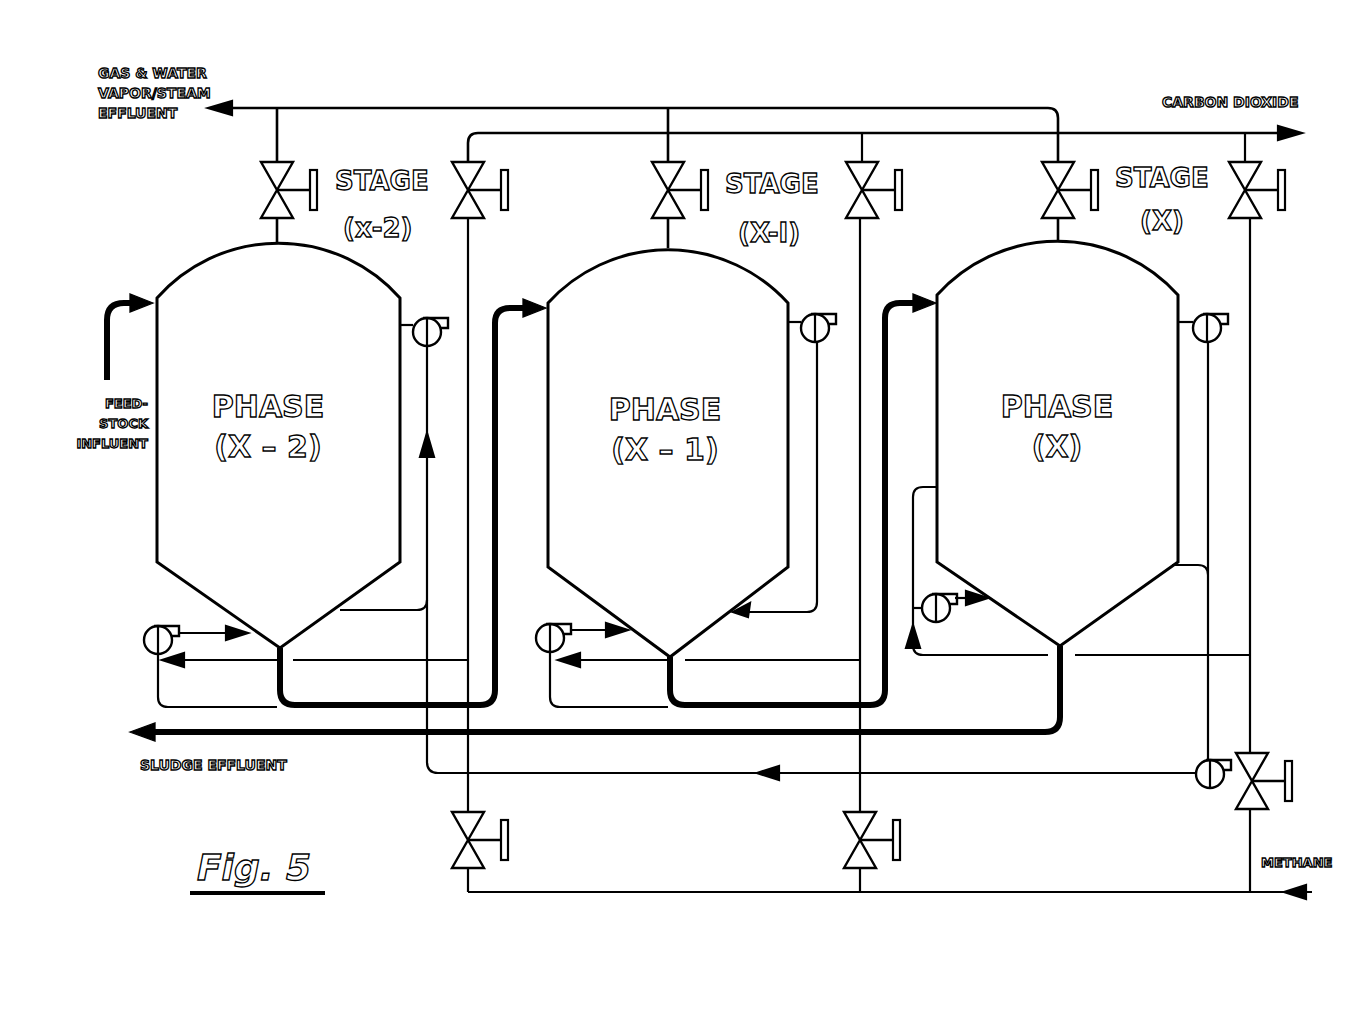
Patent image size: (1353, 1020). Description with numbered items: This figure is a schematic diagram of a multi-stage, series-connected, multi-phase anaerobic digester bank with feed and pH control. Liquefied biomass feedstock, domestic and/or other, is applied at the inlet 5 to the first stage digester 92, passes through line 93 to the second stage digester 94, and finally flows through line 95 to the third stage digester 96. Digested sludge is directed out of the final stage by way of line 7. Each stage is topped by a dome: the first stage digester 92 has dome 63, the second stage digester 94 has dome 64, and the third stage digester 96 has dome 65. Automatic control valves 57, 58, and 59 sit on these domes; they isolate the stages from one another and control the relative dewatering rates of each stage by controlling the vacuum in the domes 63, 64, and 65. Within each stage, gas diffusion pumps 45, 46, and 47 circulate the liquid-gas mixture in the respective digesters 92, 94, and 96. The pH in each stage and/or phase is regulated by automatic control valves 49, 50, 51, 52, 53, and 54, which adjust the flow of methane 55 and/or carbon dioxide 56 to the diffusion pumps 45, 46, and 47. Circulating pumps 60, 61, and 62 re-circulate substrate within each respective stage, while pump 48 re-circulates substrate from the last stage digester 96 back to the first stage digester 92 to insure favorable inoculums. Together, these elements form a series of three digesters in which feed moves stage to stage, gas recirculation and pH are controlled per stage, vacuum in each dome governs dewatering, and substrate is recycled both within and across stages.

The feedstock inlet 5 is at (152, 298).
The sludge line 7 is at (395, 745).
The gas diffusion pump 45 is at (166, 620).
The gas diffusion pump 46 is at (540, 627).
The gas diffusion pump 47 is at (953, 622).
The recirculation pump 48 is at (1185, 757).
The automatic control valve 49 is at (520, 203).
The automatic control valve 50 is at (515, 846).
The automatic control valve 51 is at (913, 196).
The automatic control valve 52 is at (908, 848).
The automatic control valve 53 is at (1277, 212).
The automatic control valve 54 is at (1245, 813).
The methane 55 is at (1298, 892).
The carbon dioxide 56 is at (1290, 140).
The automatic control valve 57 is at (263, 186).
The automatic control valve 58 is at (653, 200).
The automatic control valve 59 is at (1037, 203).
The circulating pump 60 is at (425, 314).
The circulating pump 61 is at (817, 311).
The circulating pump 62 is at (1198, 311).
The dome 63 is at (237, 280).
The dome 64 is at (595, 303).
The dome 65 is at (1037, 282).
The first stage digester 92 is at (187, 523).
The line 93 is at (508, 302).
The second stage digester 94 is at (590, 550).
The line 95 is at (905, 304).
The third stage digester 96 is at (1133, 599).